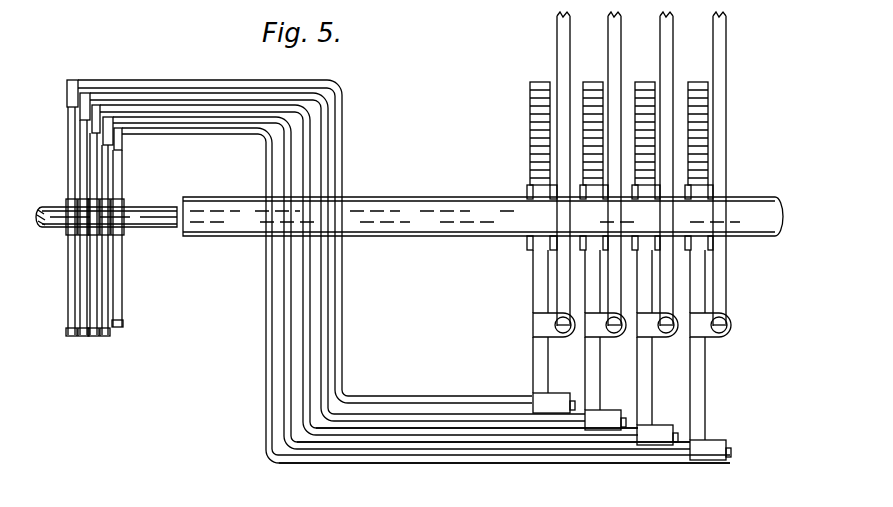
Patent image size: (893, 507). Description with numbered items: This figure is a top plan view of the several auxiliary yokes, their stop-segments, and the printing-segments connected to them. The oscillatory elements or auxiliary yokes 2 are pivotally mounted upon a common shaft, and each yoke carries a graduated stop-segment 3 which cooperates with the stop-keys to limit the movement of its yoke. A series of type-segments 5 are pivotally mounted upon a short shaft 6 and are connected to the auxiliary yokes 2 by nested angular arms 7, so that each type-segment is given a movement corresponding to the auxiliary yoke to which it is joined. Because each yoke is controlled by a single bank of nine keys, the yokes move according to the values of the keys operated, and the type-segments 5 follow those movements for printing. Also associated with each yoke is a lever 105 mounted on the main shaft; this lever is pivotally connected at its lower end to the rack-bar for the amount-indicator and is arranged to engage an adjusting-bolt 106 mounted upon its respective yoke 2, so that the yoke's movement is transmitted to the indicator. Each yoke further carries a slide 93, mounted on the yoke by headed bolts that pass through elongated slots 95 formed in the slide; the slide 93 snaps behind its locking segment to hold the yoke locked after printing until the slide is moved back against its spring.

The nested angular arms 7 is at (218, 122).
The type-segments 5 is at (120, 306).
The short shaft 6 is at (164, 213).
The graduated stop-segment 3 is at (440, 236).
The lever 105 is at (615, 274).
The adjusting-bolt 106 is at (595, 337).
The elongated slots 95 is at (623, 410).
The auxiliary yokes 2 is at (364, 442).
The slide 93 is at (558, 463).